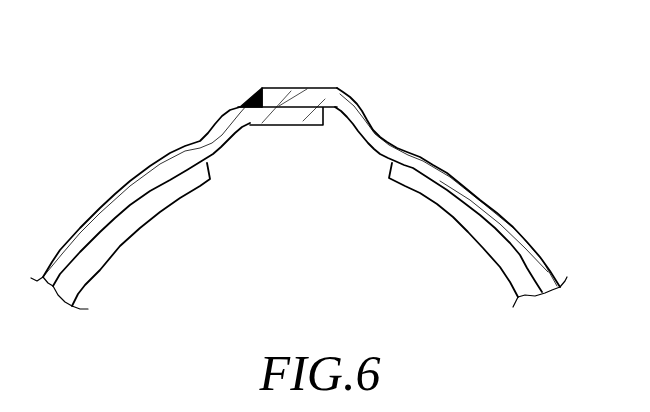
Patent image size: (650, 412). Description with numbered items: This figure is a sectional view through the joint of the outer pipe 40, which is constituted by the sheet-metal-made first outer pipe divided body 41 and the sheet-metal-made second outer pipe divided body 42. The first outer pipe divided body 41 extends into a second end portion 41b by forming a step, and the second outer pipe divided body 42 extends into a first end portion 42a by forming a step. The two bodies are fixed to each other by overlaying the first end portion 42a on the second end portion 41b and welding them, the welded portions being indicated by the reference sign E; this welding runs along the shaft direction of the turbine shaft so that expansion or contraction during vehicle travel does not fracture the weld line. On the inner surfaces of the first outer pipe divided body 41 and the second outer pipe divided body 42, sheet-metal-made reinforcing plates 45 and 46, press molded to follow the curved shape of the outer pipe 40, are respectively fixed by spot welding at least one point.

The outer pipe 40 is at (321, 198).
The first outer pipe divided body 41 is at (100, 207).
The second outer pipe divided body 42 is at (502, 212).
The second end portion 41b is at (302, 126).
The first end portion 42a is at (287, 97).
The welded portions E is at (252, 97).
The plate (reinforcing plate member) 45 is at (122, 243).
The plate (reinforcing plate member) 46 is at (478, 243).